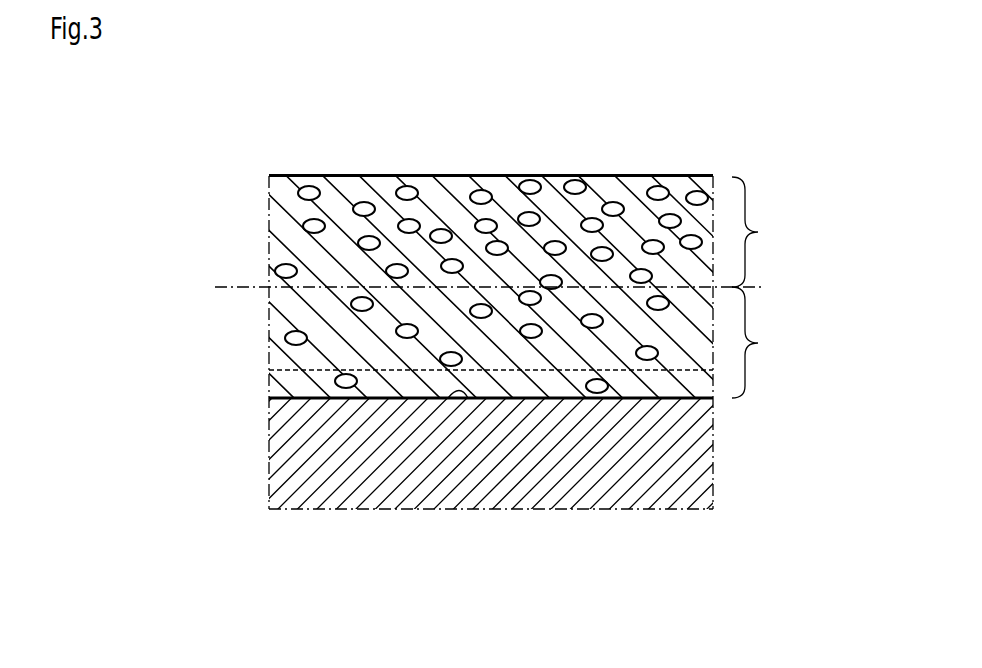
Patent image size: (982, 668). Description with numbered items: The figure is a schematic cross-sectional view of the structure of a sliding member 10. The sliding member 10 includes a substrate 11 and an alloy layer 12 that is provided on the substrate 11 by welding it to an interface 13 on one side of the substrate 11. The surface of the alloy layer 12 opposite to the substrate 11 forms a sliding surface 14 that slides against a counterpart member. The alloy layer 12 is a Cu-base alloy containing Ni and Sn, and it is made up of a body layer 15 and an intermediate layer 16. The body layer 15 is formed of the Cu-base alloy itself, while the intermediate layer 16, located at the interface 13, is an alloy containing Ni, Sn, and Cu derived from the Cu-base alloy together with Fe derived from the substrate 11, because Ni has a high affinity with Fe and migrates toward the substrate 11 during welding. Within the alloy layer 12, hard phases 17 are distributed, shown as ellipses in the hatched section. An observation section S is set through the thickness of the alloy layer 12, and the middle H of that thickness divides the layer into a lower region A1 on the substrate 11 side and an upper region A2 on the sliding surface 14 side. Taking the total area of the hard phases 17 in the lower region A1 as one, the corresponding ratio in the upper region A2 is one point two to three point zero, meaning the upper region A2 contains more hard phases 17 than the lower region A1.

The sliding member 10 is at (398, 153).
The substrate 11 is at (700, 462).
The alloy layer 12 is at (170, 225).
The interface 13 is at (468, 398).
The sliding surface 14 is at (632, 175).
The body layer 15 is at (478, 247).
The intermediate layer 16 is at (283, 389).
The hard phases 17 is at (486, 176).
The observation section S is at (360, 510).
The middle of the thickness H is at (502, 287).
The lower region A1 is at (768, 342).
The upper region A2 is at (768, 232).